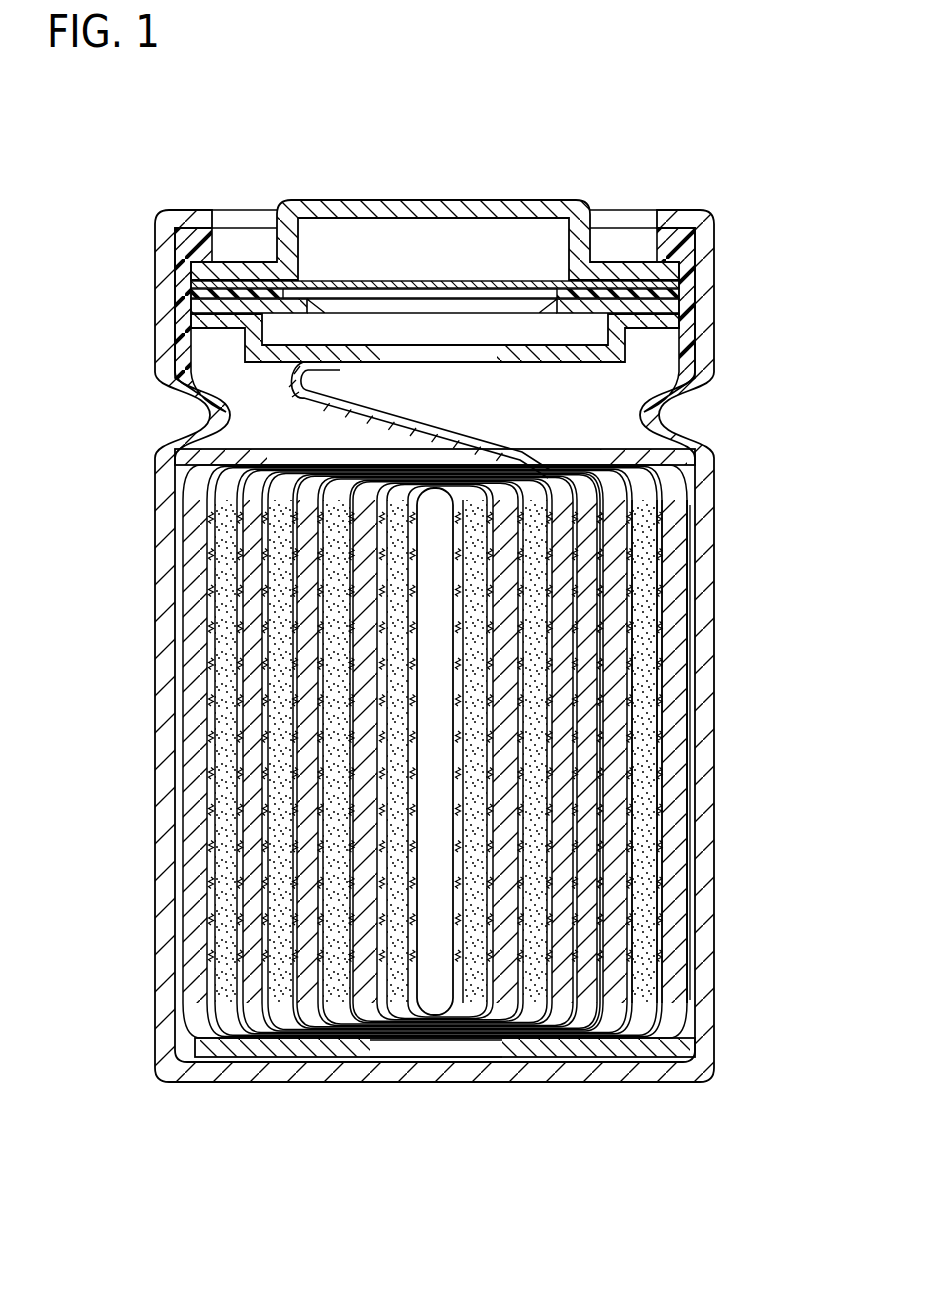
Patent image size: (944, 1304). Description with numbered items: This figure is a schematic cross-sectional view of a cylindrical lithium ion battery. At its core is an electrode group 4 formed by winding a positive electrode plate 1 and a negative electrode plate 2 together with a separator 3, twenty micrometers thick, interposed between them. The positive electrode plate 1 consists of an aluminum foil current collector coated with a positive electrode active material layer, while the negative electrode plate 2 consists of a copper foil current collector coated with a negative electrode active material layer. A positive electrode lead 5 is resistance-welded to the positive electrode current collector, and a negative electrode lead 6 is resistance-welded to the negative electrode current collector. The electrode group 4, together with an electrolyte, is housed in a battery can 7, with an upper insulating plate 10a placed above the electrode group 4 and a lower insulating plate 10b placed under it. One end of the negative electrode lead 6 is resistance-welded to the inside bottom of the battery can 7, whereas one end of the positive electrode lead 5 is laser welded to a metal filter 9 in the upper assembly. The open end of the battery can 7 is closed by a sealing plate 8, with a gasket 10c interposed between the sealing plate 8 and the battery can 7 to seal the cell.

The positive electrode plate 1 is at (655, 850).
The negative electrode plate 2 is at (680, 785).
The separator 3 is at (693, 677).
The electrode group 4 is at (790, 660).
The positive electrode lead 5 is at (484, 442).
The negative electrode lead 6 is at (493, 1062).
The battery can 7 is at (165, 625).
The sealing plate 8 is at (346, 206).
The metal filter 9 is at (225, 397).
The upper insulating plate 10a is at (700, 459).
The lower insulating plate 10b is at (672, 1047).
The gasket 10c is at (700, 284).